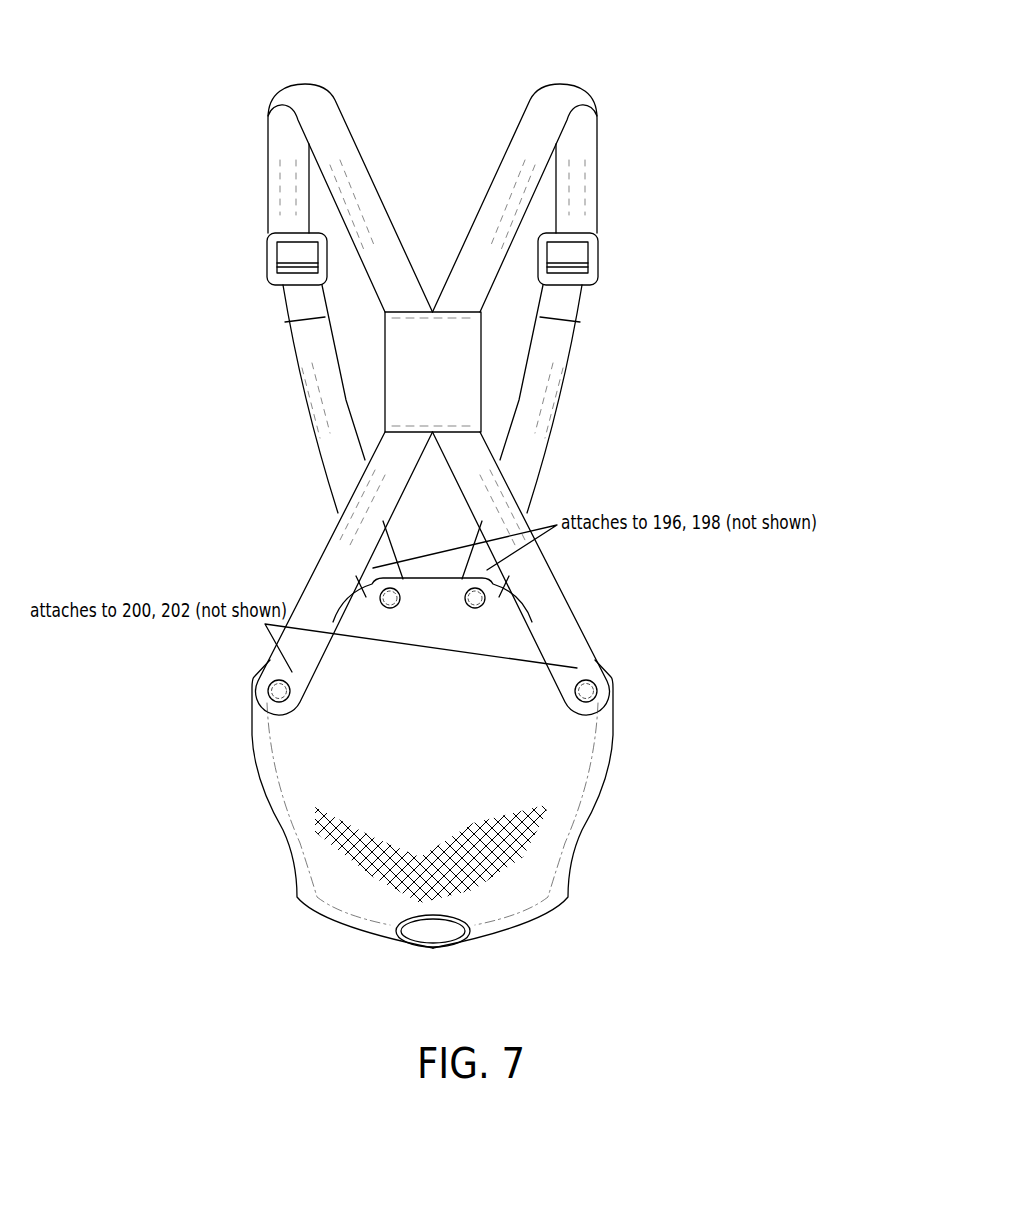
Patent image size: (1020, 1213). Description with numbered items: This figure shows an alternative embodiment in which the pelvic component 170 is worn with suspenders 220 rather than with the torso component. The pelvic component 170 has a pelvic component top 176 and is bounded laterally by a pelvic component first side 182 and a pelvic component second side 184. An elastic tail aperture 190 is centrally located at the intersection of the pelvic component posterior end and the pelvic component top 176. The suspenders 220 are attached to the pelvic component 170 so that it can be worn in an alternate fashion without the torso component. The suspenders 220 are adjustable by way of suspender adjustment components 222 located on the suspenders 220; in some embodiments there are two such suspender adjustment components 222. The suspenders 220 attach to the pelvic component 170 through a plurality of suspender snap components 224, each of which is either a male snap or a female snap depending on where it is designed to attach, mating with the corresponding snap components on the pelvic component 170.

The pelvic component 170 is at (416, 822).
The pelvic component top 176 is at (427, 780).
The pelvic component first side 182 is at (305, 740).
The pelvic component second side 184 is at (560, 778).
The elastic tail aperture 190 is at (470, 933).
The suspenders 220 is at (305, 98).
The suspender adjustment component 222 is at (600, 260).
The suspender snap component 224 is at (277, 691).